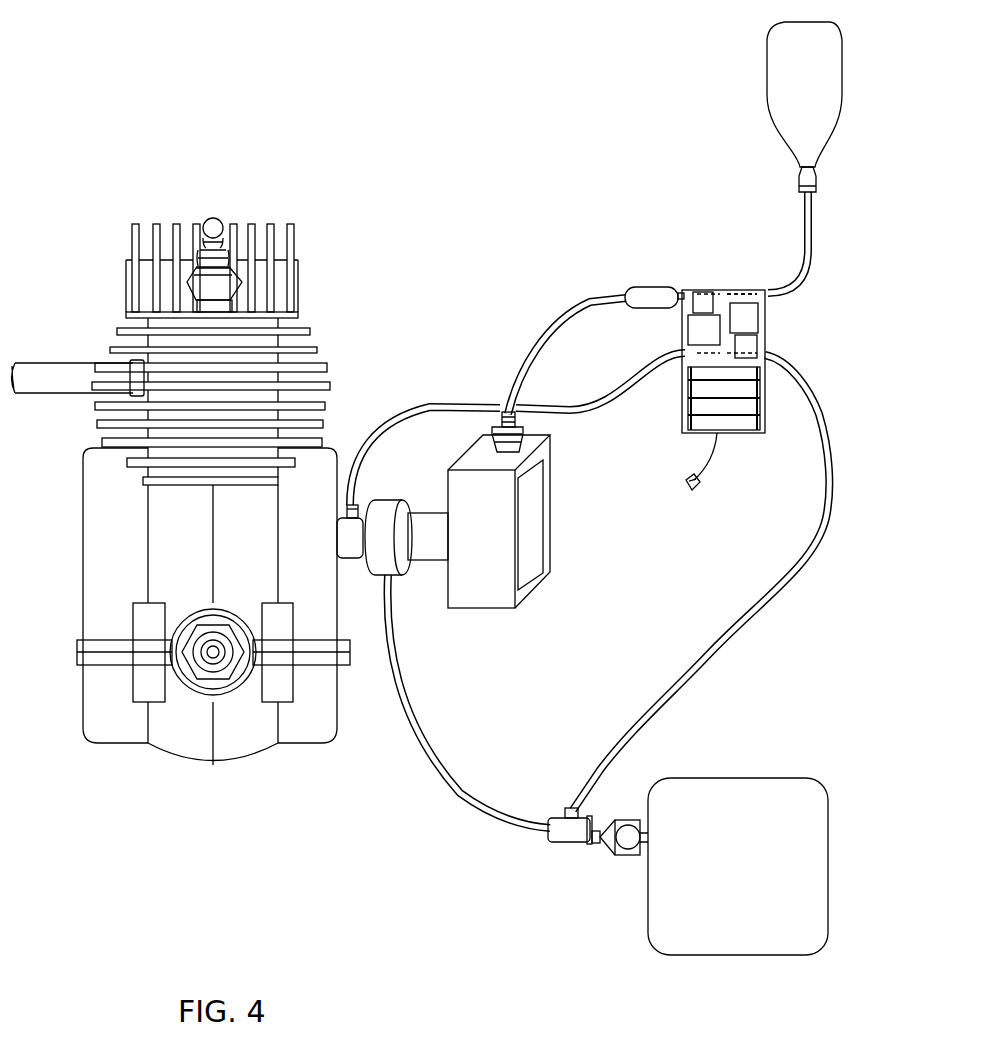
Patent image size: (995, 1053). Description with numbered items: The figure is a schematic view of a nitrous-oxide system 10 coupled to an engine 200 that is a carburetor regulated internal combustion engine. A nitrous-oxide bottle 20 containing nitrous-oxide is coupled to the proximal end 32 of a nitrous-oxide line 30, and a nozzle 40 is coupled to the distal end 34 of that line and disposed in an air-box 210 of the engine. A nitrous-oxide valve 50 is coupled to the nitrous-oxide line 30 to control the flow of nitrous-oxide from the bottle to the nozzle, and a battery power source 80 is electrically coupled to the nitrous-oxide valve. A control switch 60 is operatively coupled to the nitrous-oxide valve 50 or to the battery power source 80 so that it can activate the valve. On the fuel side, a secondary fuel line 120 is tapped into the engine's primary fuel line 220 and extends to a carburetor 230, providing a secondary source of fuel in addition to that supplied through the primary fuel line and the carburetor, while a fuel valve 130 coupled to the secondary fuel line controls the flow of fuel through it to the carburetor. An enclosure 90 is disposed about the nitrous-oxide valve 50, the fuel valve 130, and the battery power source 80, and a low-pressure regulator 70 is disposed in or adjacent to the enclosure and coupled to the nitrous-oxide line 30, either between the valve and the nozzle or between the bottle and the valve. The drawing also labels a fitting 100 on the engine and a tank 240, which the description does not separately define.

The nitrous-oxide system 10 is at (658, 133).
The nitrous-oxide bottle 20 is at (771, 106).
The nitrous-oxide line 30 is at (810, 250).
The proximal end 32 is at (809, 198).
The distal end 34 is at (560, 410).
The nozzle 40 is at (535, 446).
The nitrous-oxide valve 50 is at (761, 357).
The control switch 60 is at (688, 488).
The low-pressure regulator 70 is at (657, 290).
The battery power source 80 is at (743, 428).
The enclosure 90 is at (745, 290).
The engine fuel inlet fitting 100 is at (355, 504).
The secondary fuel line 120 is at (398, 412).
The fuel valve 130 is at (752, 318).
The engine 200 is at (205, 190).
The air-box 210 is at (551, 552).
The primary fuel line 220 is at (560, 842).
The carburetor 230 is at (403, 576).
The fuel tank 240 is at (653, 940).